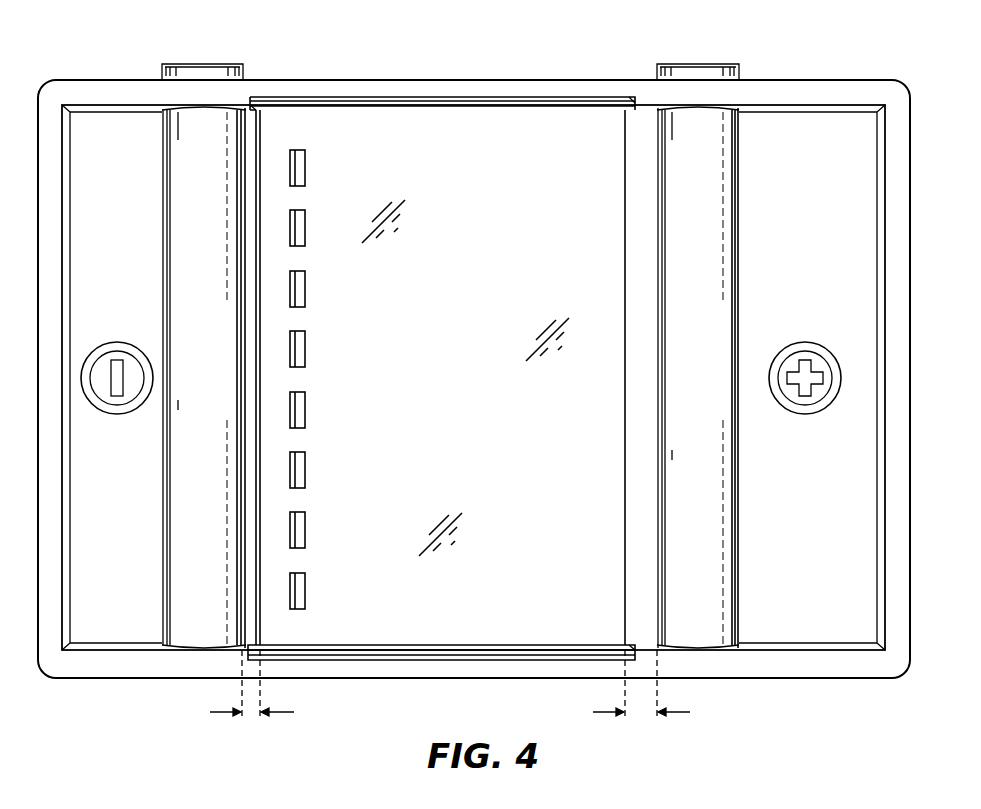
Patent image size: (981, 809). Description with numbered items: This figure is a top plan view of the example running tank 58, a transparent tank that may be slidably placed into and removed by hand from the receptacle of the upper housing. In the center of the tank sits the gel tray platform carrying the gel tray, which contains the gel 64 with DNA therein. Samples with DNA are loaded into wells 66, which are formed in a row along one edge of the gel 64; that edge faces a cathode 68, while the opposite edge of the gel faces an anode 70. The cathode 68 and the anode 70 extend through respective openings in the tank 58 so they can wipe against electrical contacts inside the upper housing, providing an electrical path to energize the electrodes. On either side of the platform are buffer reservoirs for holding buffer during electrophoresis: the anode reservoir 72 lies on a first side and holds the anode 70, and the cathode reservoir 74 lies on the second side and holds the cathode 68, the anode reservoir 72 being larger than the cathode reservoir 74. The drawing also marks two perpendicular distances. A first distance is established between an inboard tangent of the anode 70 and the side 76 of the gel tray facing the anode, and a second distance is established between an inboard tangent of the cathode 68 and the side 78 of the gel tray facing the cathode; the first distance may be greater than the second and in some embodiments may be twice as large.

The running tank 58 is at (428, 80).
The gel 64 is at (484, 172).
The wells 66 is at (305, 167).
The cathode 68 is at (190, 177).
The anode 70 is at (710, 174).
The anode reservoir 72 is at (792, 138).
The cathode reservoir 74 is at (107, 140).
The side of the gel tray facing the anode 76 is at (628, 150).
The side of the gel tray facing the cathode 78 is at (258, 148).